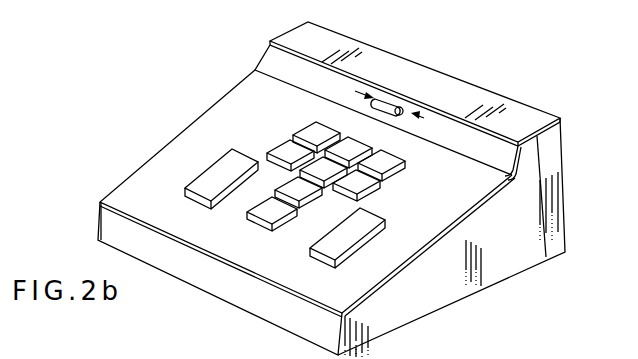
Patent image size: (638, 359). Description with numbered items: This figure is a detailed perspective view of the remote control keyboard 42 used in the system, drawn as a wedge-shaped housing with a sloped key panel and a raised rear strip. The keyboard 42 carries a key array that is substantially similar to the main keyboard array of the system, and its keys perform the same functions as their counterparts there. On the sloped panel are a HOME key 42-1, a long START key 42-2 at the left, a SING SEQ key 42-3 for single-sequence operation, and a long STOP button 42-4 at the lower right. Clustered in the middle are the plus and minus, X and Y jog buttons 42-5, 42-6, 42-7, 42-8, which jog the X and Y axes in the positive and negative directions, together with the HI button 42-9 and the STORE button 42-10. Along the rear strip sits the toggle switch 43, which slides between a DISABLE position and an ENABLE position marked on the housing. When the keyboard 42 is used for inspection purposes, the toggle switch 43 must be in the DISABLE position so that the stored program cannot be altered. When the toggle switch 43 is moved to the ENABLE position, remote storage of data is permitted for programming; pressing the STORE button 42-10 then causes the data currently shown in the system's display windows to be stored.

The remote control keyboard 42 is at (190, 309).
The toggle switch 43 is at (392, 100).
The HOME key 42-1 is at (296, 137).
The START key 42-2 is at (192, 196).
The SING SEQ key 42-3 is at (274, 231).
The STOP button 42-4 is at (369, 228).
The X+ jog button 42-5 is at (381, 188).
The X− jog button 42-6 is at (267, 152).
The Y+ jog button 42-7 is at (352, 143).
The Y− jog button 42-8 is at (272, 190).
The HI button 42-9 is at (327, 152).
The STORE button 42-10 is at (405, 163).